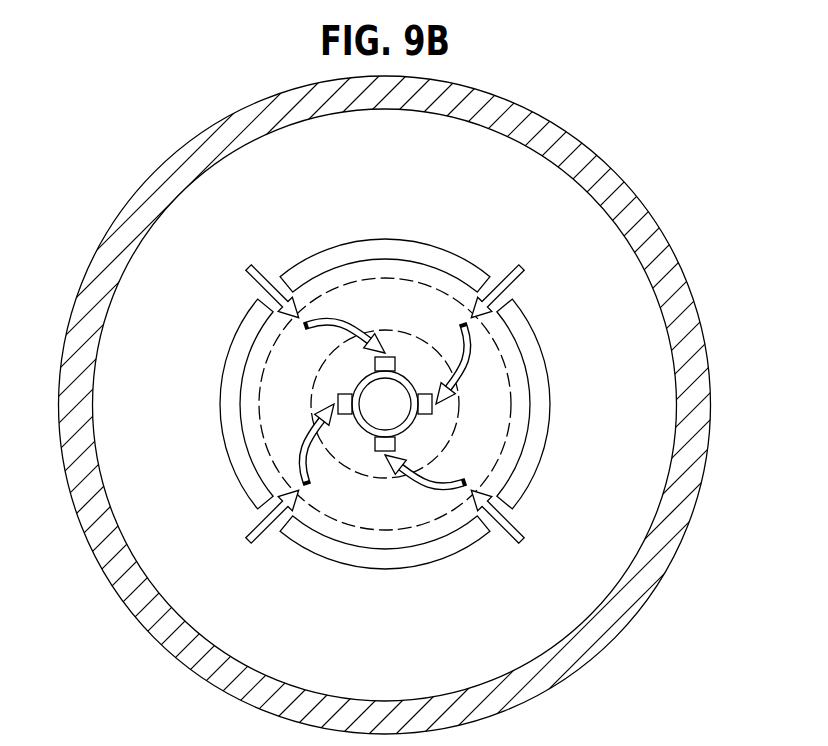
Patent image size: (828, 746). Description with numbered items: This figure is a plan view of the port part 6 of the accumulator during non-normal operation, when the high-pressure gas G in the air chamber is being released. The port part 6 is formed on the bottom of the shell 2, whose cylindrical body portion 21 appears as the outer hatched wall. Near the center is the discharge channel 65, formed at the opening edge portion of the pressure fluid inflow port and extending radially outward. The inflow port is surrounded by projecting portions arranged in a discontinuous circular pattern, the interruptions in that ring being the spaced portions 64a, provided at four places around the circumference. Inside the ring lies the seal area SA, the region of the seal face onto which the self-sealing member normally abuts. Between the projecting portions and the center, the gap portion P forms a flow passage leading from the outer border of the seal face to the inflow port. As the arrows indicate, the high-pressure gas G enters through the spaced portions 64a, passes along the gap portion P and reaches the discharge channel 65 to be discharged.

The body portion 21 is at (414, 373).
The shell 2 is at (612, 168).
The port part 6 is at (582, 379).
The spaced portion 64a is at (260, 299).
The discharge channel 65 is at (390, 360).
The gap portion P is at (358, 308).
The seal area SA is at (283, 404).
The high-pressure gas G is at (386, 404).